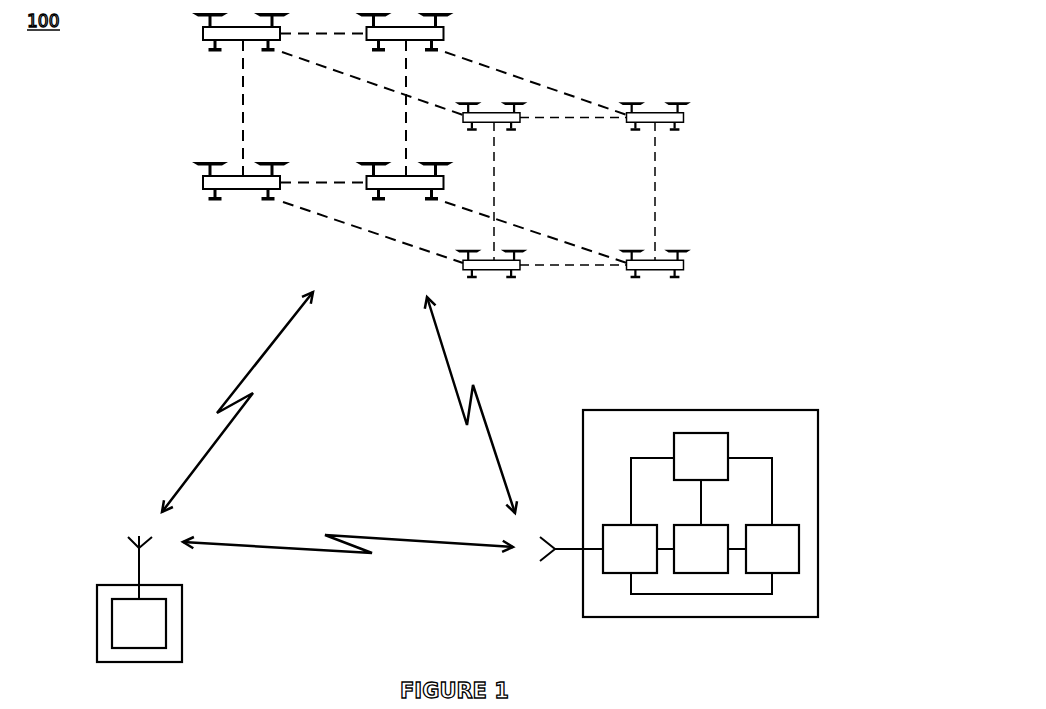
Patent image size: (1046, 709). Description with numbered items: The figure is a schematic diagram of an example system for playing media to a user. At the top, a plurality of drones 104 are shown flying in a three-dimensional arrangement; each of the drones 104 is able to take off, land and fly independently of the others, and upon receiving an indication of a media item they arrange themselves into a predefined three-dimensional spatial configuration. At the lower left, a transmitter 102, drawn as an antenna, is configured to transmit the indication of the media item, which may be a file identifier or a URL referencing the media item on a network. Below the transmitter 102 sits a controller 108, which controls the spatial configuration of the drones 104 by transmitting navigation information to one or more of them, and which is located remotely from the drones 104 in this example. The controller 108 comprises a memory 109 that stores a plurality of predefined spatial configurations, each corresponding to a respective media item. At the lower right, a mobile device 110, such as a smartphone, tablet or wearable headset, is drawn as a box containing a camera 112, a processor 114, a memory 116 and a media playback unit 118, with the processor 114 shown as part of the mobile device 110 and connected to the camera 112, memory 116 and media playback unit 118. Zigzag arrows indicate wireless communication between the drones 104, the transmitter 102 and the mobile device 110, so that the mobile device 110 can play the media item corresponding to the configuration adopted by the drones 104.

The transmitter 102 is at (128, 541).
The drones 104 is at (192, 113).
The controller 108 is at (97, 628).
The memory 109 is at (139, 623).
The mobile device 110 is at (820, 470).
The camera 112 is at (701, 456).
The processor 114 is at (630, 549).
The memory 116 is at (701, 549).
The media playback unit 118 is at (772, 549).